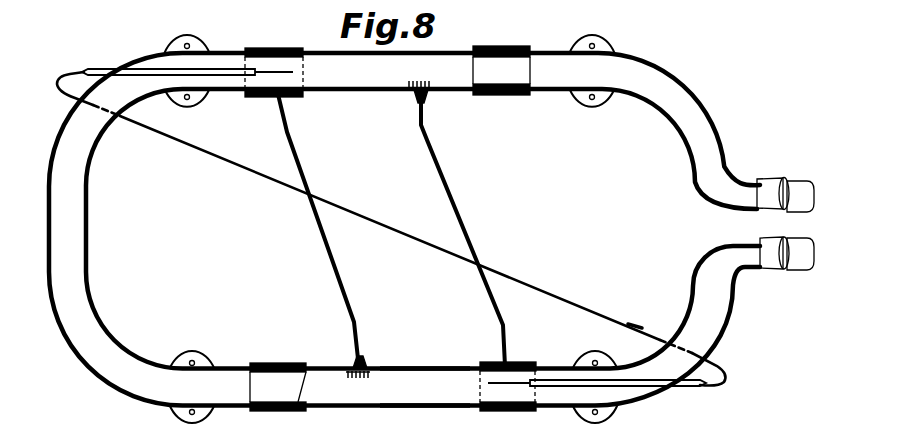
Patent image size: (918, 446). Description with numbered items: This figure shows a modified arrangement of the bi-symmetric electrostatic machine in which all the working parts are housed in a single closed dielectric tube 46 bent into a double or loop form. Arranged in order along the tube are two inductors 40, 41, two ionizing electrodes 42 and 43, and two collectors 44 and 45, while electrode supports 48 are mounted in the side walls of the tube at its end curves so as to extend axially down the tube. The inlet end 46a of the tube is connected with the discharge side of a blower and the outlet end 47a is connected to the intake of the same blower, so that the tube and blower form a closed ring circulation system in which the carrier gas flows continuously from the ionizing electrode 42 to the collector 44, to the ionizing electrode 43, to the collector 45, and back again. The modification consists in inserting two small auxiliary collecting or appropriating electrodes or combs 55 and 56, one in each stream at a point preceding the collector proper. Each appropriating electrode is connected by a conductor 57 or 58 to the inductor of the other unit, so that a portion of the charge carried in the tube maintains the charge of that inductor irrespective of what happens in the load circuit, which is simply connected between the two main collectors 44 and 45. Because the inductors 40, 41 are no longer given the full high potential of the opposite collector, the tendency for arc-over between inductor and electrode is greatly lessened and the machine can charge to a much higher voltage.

The first inductor 40 is at (523, 366).
The second inductor 41 is at (268, 72).
The first ionizing electrode 42 is at (503, 388).
The second ionizing electrode 43 is at (282, 30).
The first collector 44 is at (310, 370).
The second collector 45 is at (531, 82).
The closed dielectric tube 46 is at (438, 340).
The inlet end of the tube 46a is at (772, 266).
The outlet end of the tube 47a is at (770, 183).
The electrode support 48 is at (156, 60).
The auxiliary appropriating electrode 55 is at (363, 382).
The auxiliary appropriating electrode 56 is at (430, 78).
The conductor 57 is at (295, 151).
The conductor 58 is at (450, 194).